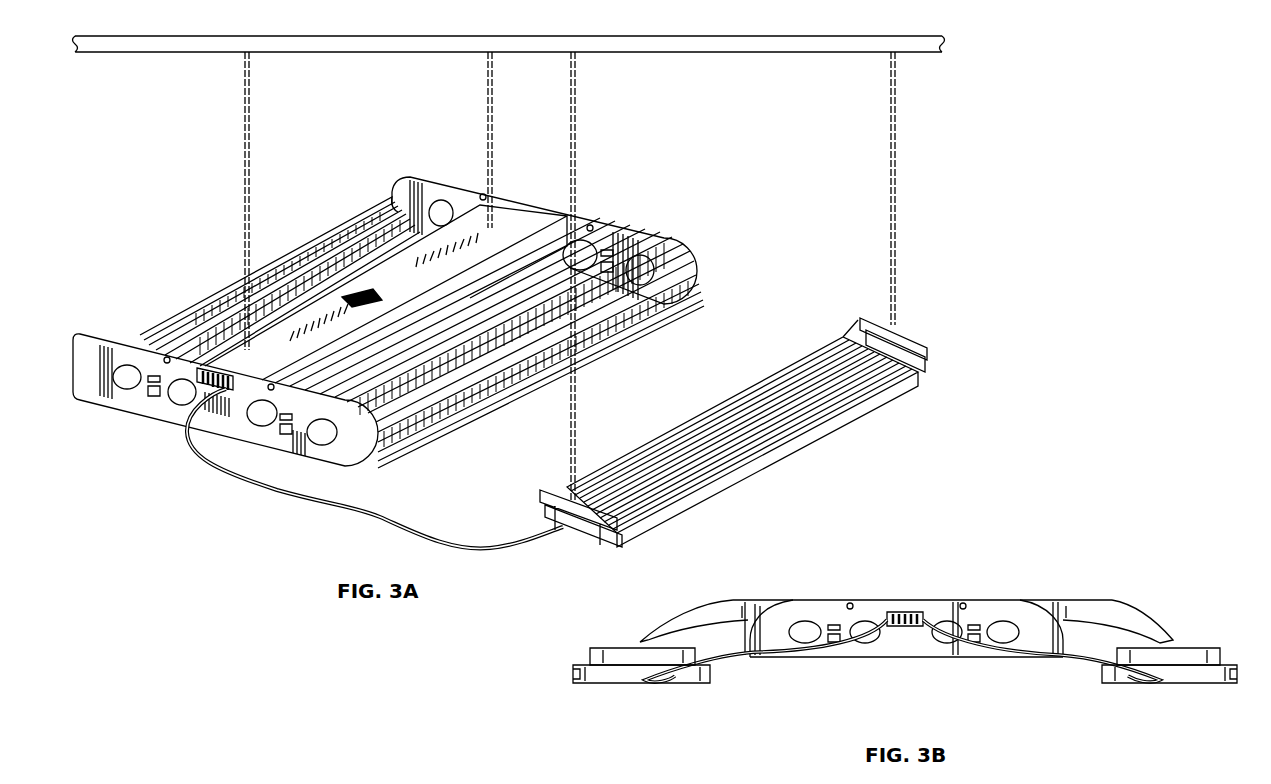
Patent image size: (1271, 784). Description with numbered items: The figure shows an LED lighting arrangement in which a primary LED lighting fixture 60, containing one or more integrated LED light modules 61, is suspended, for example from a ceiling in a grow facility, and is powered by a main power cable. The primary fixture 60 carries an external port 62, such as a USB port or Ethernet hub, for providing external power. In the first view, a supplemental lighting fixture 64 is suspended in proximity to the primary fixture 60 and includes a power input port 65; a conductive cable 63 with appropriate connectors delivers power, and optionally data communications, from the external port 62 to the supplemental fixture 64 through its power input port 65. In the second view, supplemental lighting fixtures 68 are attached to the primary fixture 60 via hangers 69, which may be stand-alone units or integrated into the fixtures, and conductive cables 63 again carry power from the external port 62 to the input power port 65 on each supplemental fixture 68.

In FIG. 3A, the primary LED lighting fixture 60 is at (349, 199).
In FIG. 3B, the primary LED lighting fixture 60 is at (908, 660).
In FIG. 3A, the integrated LED light module 61 is at (190, 312).
In FIG. 3A, the external port 62 is at (183, 394).
In FIG. 3B, the external port 62 is at (897, 610).
In FIG. 3A, the conductive cable 63 is at (278, 491).
In FIG. 3B, the conductive cable 63 is at (757, 665).
In FIG. 3A, the supplemental lighting fixture 64 is at (853, 438).
In FIG. 3A, the power input port 65 is at (583, 530).
In FIG. 3B, the power input port 65 is at (640, 683).
In FIG. 3B, the supplemental lighting fixture 68 is at (612, 650).
In FIG. 3B, the hanger 69 is at (740, 600).